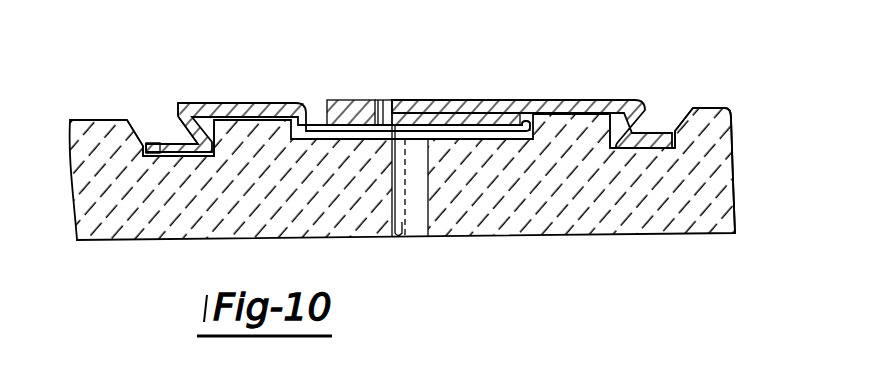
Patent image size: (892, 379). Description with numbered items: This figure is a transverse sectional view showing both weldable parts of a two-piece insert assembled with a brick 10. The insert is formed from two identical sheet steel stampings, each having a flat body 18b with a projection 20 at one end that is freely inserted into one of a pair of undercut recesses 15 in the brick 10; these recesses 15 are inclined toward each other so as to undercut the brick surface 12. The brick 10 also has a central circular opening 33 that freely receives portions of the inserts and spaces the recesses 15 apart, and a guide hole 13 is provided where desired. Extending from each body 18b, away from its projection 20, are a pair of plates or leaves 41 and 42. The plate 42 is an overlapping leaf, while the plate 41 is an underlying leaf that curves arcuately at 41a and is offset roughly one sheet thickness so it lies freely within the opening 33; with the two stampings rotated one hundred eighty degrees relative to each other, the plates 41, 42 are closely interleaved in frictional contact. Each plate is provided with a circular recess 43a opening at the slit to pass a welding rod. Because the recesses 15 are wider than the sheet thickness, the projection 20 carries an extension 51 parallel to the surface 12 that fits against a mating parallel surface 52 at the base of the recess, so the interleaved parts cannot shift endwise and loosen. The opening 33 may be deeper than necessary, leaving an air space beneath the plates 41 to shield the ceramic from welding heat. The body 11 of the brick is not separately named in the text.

The brick 10 is at (753, 146).
The body panel 11 is at (655, 233).
The brick surface 12 is at (596, 104).
The guide hole 13 is at (396, 240).
The undercut recesses 15 is at (160, 126).
The flat body 18b is at (222, 104).
The projection 20 is at (176, 124).
The central circular opening 33 is at (522, 136).
The plate 41 is at (361, 106).
The arcuate portion of plate 41 41a is at (313, 117).
The plate 42 is at (522, 105).
The circular recess 43a is at (445, 106).
The extension 51 is at (157, 155).
The mating parallel surface 52 is at (157, 150).